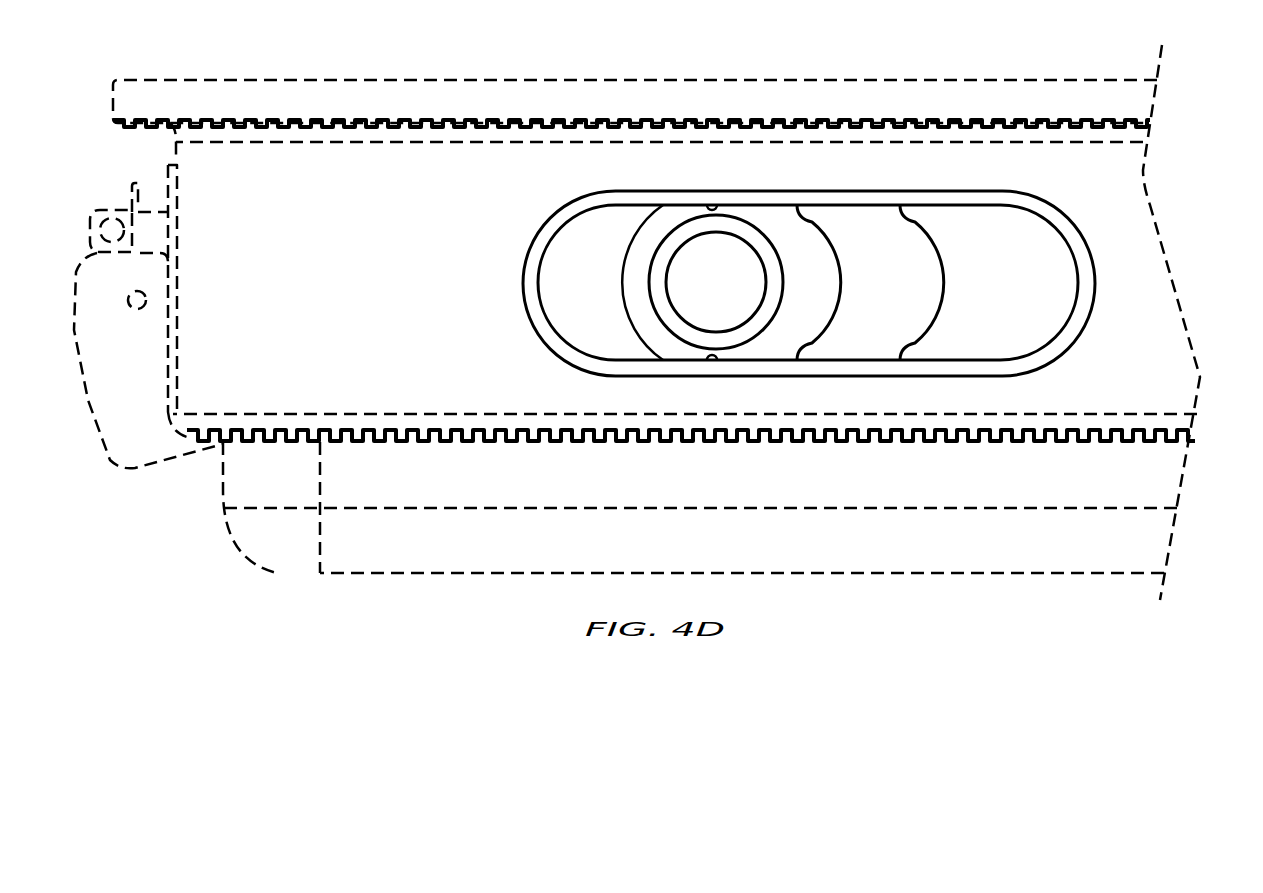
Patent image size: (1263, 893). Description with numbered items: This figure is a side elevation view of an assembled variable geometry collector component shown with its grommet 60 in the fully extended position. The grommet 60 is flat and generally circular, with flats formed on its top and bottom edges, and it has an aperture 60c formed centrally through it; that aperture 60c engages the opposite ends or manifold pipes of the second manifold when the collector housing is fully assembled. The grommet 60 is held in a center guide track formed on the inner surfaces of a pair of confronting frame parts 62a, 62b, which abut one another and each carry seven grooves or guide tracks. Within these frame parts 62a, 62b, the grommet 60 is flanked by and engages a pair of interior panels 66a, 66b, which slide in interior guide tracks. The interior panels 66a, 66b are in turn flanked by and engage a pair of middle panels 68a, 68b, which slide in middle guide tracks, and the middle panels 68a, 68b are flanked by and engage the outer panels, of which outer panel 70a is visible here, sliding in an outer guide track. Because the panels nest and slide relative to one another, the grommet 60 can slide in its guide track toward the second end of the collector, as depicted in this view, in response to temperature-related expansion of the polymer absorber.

The grommet 60 is at (725, 225).
The aperture 60c is at (677, 307).
The confronting frame part 62a is at (1097, 290).
The confronting frame part 62b is at (533, 267).
The interior panel 66a is at (842, 264).
The interior panel 66b is at (673, 220).
The middle panel 68a is at (942, 290).
The middle panel 68b is at (582, 243).
The outer panel 70a is at (1040, 257).